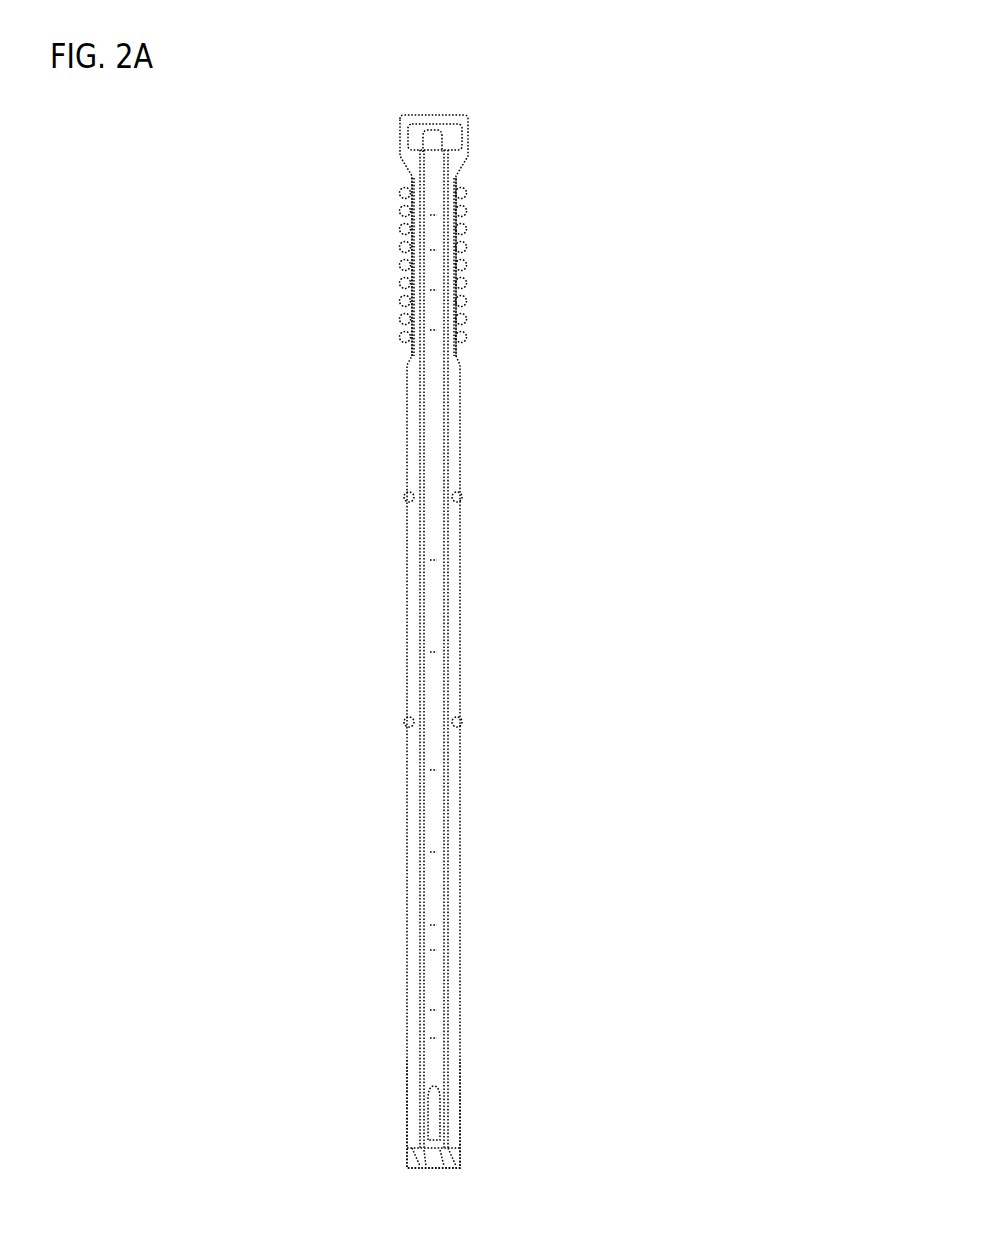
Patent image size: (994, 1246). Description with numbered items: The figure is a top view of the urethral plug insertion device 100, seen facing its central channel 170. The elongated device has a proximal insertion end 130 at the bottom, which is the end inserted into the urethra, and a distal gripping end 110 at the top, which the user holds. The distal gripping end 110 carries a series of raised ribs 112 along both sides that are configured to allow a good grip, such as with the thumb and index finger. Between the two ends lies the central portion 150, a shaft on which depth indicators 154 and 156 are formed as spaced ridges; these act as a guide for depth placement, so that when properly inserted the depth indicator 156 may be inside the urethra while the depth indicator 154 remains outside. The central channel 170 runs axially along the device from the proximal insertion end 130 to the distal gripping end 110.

The urethral plug insertion device 100 is at (578, 175).
The distal gripping end 110 is at (404, 268).
The raised ribs 112 is at (480, 174).
The proximal insertion end 130 is at (413, 1070).
The central portion 150 is at (422, 630).
The depth indicator 154 is at (404, 497).
The depth indicator 156 is at (405, 722).
The central channel 170 is at (427, 978).